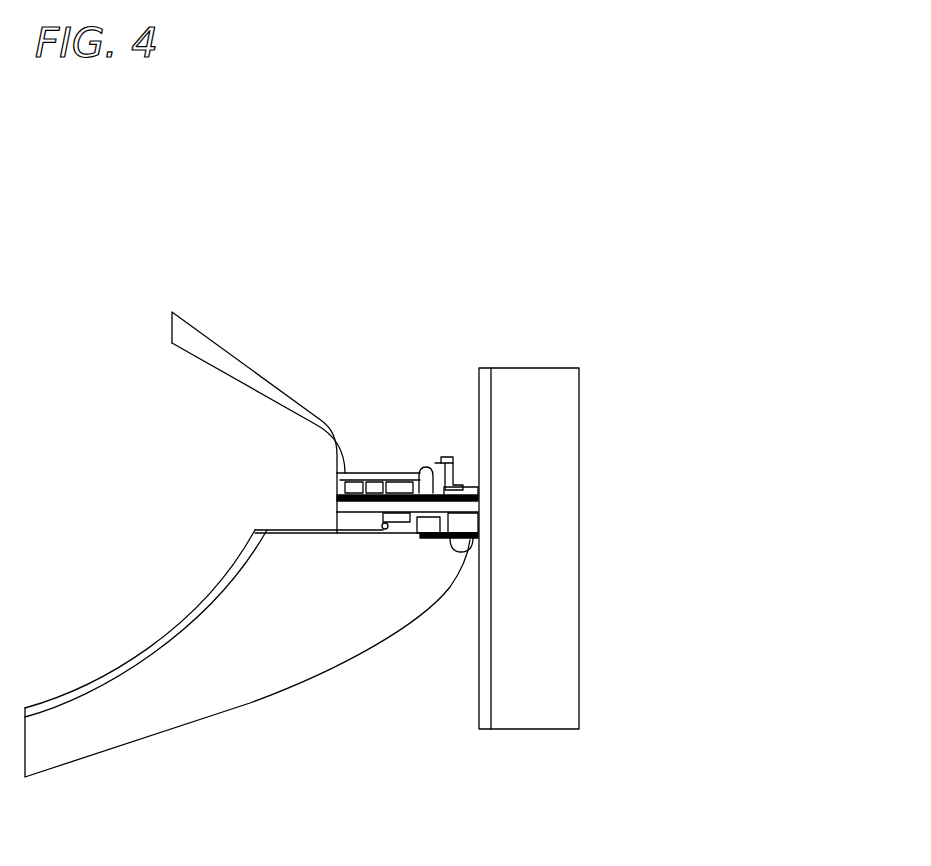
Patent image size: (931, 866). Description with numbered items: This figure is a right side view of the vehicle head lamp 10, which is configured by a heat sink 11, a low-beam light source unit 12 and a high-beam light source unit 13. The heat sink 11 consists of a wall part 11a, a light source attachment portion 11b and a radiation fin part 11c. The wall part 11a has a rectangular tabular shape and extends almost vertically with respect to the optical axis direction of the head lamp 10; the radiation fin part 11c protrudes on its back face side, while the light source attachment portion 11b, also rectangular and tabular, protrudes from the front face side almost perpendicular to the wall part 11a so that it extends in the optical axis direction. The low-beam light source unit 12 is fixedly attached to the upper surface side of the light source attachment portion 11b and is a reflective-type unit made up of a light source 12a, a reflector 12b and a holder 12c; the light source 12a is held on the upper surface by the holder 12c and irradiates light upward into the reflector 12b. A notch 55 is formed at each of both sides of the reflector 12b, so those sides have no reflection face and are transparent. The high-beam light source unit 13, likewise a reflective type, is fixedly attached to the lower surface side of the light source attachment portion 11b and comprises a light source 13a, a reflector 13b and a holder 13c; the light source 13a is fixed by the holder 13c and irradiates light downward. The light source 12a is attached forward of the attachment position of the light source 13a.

The vehicle head lamp 10 is at (604, 221).
The heat sink 11 is at (423, 289).
The wall part 11a is at (488, 368).
The light source attachment portion 11b is at (438, 462).
The radiation fin part 11c is at (538, 368).
The low-beam light source unit 12 is at (210, 265).
The light source 12a is at (370, 468).
The reflector 12b is at (200, 325).
The holder 12c is at (418, 466).
The high-beam light source unit 13 is at (413, 766).
The light source 13a is at (397, 533).
The reflector 13b is at (262, 701).
The holder 13c is at (443, 533).
The notch 55 is at (248, 387).